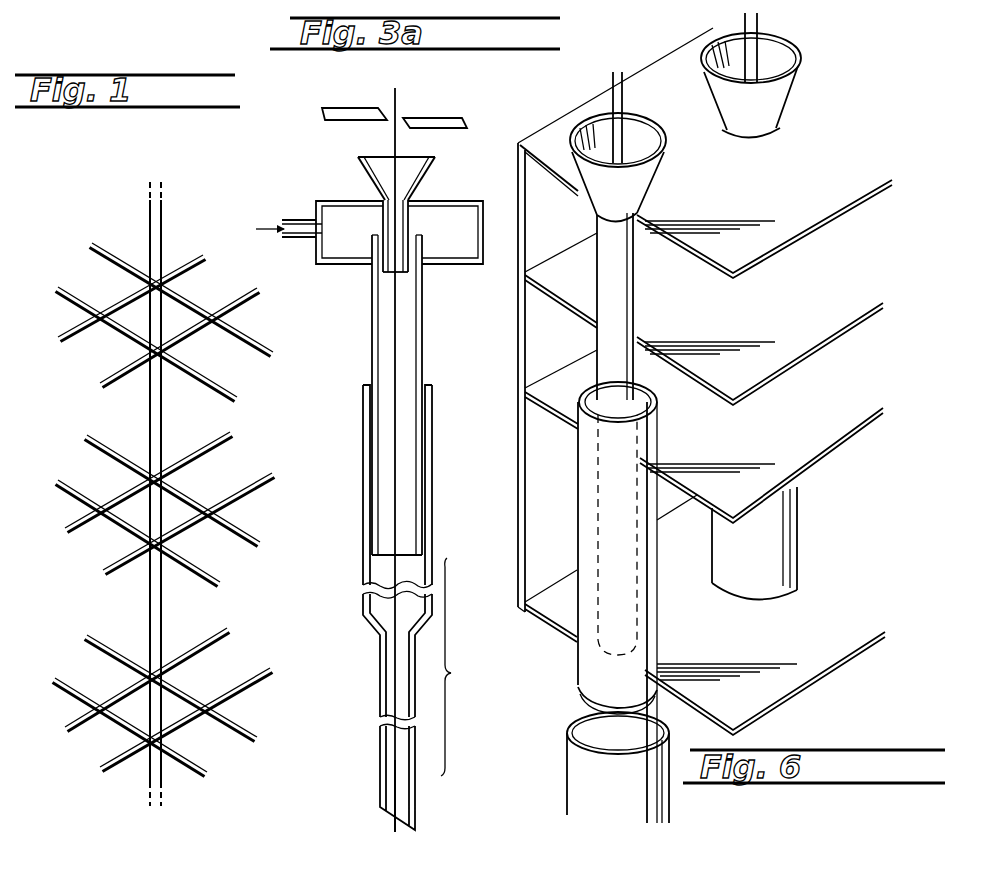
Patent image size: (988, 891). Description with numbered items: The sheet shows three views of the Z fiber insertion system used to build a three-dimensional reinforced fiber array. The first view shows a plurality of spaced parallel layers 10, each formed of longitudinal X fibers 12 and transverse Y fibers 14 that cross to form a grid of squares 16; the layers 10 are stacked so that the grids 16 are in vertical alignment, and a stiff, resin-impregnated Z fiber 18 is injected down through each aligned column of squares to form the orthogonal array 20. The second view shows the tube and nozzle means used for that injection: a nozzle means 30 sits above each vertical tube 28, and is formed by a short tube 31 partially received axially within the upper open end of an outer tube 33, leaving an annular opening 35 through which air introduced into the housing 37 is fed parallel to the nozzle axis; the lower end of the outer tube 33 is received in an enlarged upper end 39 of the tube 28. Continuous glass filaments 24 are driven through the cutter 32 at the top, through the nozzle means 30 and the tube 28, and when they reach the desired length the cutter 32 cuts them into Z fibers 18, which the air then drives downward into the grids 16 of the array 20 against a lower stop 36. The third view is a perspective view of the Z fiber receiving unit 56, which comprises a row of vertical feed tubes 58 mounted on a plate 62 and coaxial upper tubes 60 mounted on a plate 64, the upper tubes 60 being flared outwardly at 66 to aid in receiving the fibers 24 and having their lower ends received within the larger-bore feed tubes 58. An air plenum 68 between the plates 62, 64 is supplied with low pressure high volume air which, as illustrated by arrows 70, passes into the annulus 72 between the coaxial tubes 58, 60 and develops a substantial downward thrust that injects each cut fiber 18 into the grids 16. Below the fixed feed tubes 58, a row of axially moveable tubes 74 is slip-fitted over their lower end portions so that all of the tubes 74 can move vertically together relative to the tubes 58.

In FIG. 1, the layers 10 is at (188, 256).
In FIG. 1, the X fibers 12 is at (238, 382).
In FIG. 1, the Y fibers 14 is at (104, 381).
In FIG. 6, the Y fibers 14 is at (663, 2).
In FIG. 1, the grid of squares 16 is at (184, 321).
In FIG. 1, the Z fibers 18 is at (163, 213).
In FIG. 3a, the Z fibers 18 is at (397, 790).
In FIG. 1, the array 20 is at (252, 417).
In FIG. 3a, the continuous glass filaments 24 is at (400, 99).
In FIG. 6, the continuous glass filaments 24 is at (624, 98).
In FIG. 3a, the tubes 28 is at (381, 759).
In FIG. 3a, the nozzle means 30 is at (430, 276).
In FIG. 3a, the short tube 31 is at (413, 200).
In FIG. 3a, the cutter 32 is at (460, 118).
In FIG. 3a, the outer tube 33 is at (422, 342).
In FIG. 3a, the annular opening 35 is at (383, 233).
In FIG. 6, the lower stop 36 is at (820, 0).
In FIG. 3a, the housing 37 is at (356, 265).
In FIG. 3a, the enlarged upper end 39 is at (428, 497).
In FIG. 6, the unit 56 is at (780, 192).
In FIG. 6, the feed tubes 58 is at (730, 583).
In FIG. 6, the upper tubes 60 is at (629, 292).
In FIG. 6, the plate 62 is at (804, 456).
In FIG. 6, the plate 64 is at (763, 240).
In FIG. 6, the flared portion 66 is at (737, 128).
In FIG. 6, the air plenum 68 is at (776, 452).
In FIG. 6, the arrows 70 is at (586, 387).
In FIG. 6, the annulus 72 is at (613, 410).
In FIG. 6, the axially moveable tubes 74 is at (572, 765).